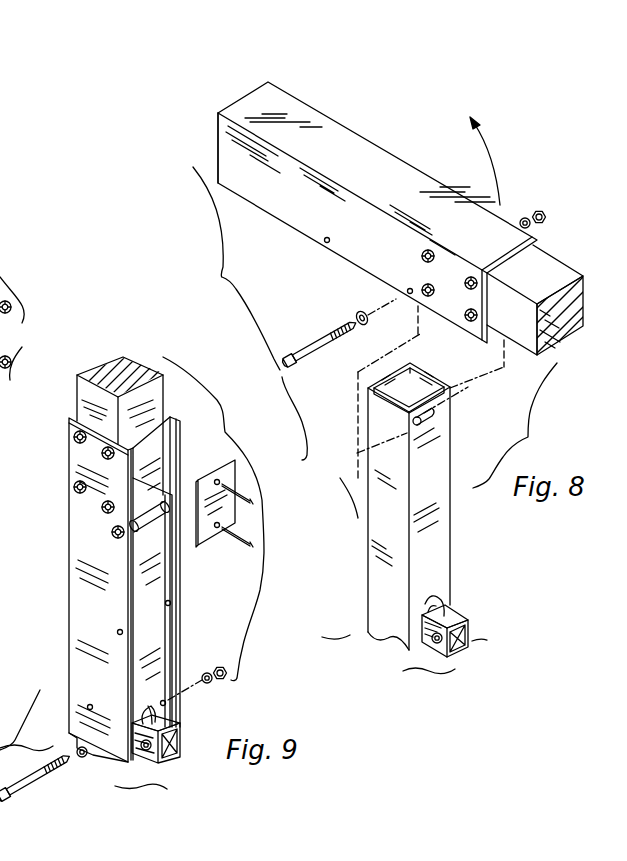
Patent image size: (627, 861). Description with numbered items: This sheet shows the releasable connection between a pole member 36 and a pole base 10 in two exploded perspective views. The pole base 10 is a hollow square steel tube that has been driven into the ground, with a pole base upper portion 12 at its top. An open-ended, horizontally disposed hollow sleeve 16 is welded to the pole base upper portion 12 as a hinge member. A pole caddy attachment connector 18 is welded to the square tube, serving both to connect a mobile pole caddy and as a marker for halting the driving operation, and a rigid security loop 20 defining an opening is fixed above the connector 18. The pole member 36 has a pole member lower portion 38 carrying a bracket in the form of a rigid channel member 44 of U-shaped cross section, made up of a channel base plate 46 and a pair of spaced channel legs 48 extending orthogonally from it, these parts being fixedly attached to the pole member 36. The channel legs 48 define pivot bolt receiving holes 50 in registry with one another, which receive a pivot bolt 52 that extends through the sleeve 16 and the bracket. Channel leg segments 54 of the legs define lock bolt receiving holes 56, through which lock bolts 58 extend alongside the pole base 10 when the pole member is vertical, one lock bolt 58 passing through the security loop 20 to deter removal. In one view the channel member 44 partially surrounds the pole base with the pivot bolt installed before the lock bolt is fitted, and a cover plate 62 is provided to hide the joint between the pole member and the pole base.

In FIG. 8, the pole base 10 is at (436, 540).
In FIG. 9, the pole base 10 is at (155, 636).
In FIG. 8, the pole base upper portion 12 is at (444, 466).
In FIG. 9, the pole base upper portion 12 is at (163, 570).
In FIG. 8, the hollow sleeve 16 is at (436, 418).
In FIG. 9, the hollow sleeve 16 is at (151, 522).
In FIG. 8, the pole caddy attachment connector 18 is at (458, 615).
In FIG. 9, the pole caddy attachment connector 18 is at (179, 746).
In FIG. 8, the rigid security loop 20 is at (442, 600).
In FIG. 9, the rigid security loop 20 is at (152, 713).
In FIG. 8, the pole member 36 is at (544, 268).
In FIG. 9, the pole member 36 is at (88, 404).
In FIG. 9, the pole member lower portion 38 is at (143, 446).
In FIG. 8, the rigid channel member 44 is at (218, 112).
In FIG. 8, the channel base plate 46 is at (332, 130).
In FIG. 8, the channel legs 48 is at (305, 215).
In FIG. 9, the channel legs 48 is at (89, 600).
In FIG. 8, the pivot bolt receiving holes 50 is at (409, 290).
In FIG. 8, the pivot bolt 52 is at (333, 348).
In FIG. 9, the pivot bolt 52 is at (114, 538).
In FIG. 8, the channel leg segments 54 is at (228, 151).
In FIG. 9, the channel leg segments 54 is at (115, 746).
In FIG. 9, the lock bolt receiving holes 56 is at (169, 702).
In FIG. 9, the lock bolts 58 is at (34, 773).
In FIG. 9, the cover plate 62 is at (224, 474).